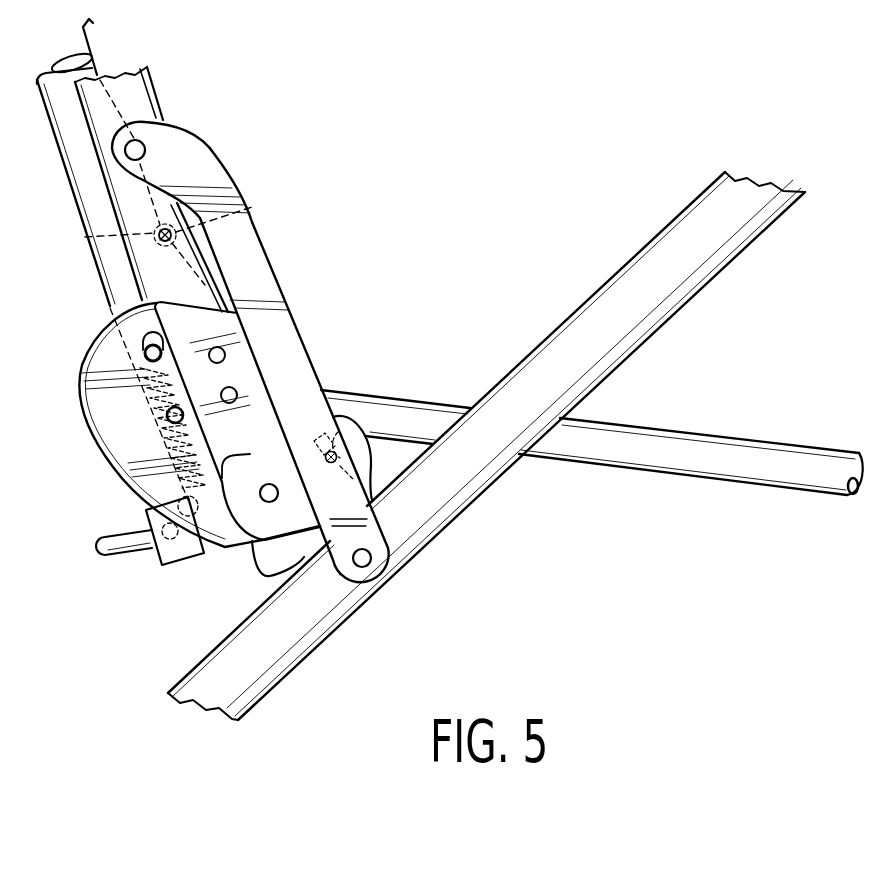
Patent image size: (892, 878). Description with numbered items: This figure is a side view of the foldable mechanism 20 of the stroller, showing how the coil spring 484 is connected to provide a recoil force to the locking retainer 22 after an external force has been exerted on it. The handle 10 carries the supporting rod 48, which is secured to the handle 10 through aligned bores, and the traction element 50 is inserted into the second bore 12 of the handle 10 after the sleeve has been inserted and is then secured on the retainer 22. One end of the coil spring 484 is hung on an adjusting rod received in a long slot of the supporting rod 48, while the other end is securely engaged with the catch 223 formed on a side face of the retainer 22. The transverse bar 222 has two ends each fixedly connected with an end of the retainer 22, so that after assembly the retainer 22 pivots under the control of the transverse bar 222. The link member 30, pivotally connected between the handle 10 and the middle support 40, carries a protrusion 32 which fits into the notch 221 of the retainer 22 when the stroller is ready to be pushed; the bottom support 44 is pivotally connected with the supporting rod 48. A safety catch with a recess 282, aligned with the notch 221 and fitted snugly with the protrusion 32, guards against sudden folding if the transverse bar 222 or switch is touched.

The handle 10 is at (138, 93).
The second bore 12 is at (82, 237).
The foldable mechanism 20 is at (84, 400).
The retainer 22 is at (212, 553).
The link member 30 is at (218, 180).
The protrusion 32 is at (374, 495).
The middle support 40 is at (738, 246).
The bottom support 44 is at (762, 489).
The supporting rod 48 is at (72, 140).
The traction element 50 is at (225, 297).
The notch 221 is at (330, 558).
The transverse bar 222 is at (128, 556).
The catch 223 is at (188, 542).
The recess 282 is at (132, 352).
The coil spring 484 is at (150, 470).